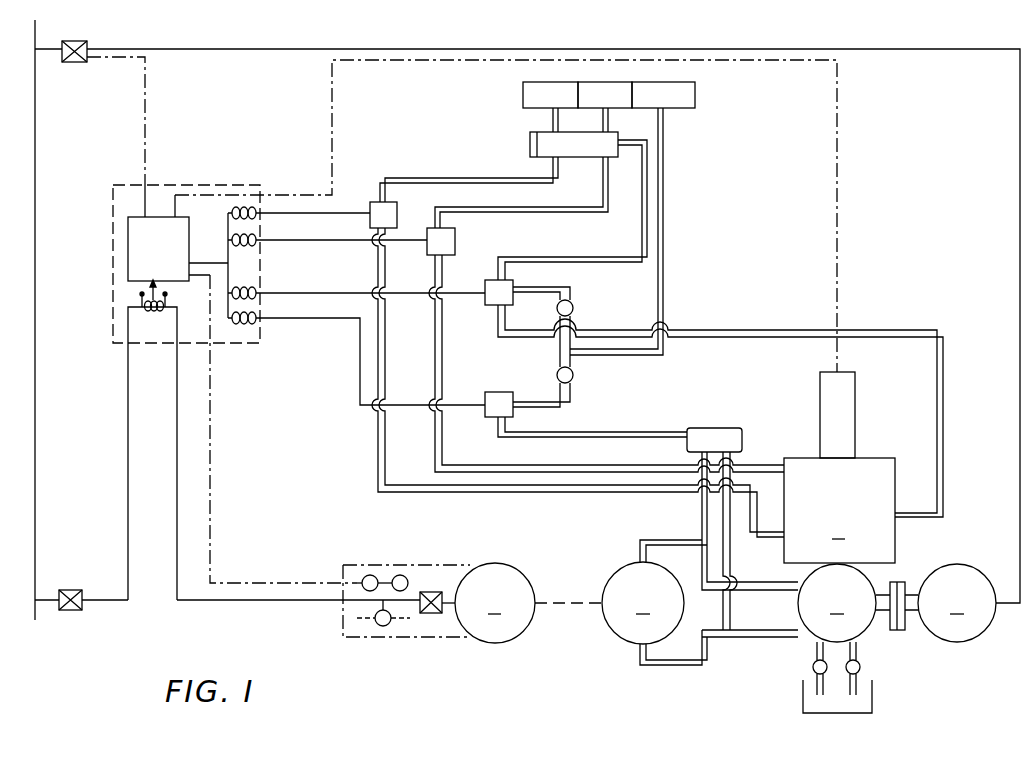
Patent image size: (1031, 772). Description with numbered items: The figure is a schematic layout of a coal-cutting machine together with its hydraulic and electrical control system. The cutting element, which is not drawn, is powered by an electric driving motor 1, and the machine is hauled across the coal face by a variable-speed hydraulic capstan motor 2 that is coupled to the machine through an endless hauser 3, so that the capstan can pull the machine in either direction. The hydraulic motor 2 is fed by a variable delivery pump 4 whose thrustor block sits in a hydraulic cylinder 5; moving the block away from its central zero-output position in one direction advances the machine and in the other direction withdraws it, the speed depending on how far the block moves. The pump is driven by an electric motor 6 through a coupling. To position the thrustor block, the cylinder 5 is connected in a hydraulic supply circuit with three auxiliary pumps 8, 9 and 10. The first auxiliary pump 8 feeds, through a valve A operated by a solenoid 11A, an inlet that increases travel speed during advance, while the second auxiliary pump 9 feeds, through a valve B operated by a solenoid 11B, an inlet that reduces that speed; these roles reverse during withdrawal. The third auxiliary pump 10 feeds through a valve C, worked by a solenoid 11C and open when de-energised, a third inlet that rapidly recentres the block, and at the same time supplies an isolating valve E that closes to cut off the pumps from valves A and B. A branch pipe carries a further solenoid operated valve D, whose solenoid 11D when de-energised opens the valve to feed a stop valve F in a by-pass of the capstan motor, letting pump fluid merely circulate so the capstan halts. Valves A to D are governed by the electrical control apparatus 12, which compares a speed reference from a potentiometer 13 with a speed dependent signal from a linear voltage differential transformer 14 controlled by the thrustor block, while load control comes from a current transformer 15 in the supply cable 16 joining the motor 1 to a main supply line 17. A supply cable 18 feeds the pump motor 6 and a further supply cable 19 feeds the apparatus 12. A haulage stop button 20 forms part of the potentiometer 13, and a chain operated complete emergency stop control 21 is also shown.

The electric driving motor 1 is at (495, 603).
The variable-speed hydraulic capstan motor 2 is at (643, 603).
The endless hauser 3 is at (576, 595).
The variable delivery pump 4 is at (837, 638).
The hydraulic cylinder 5 is at (839, 510).
The electric motor 6 is at (936, 603).
The first auxiliary pump 8 is at (550, 107).
The second auxiliary pump 9 is at (605, 107).
The third auxiliary pump 10 is at (663, 95).
The solenoid 11A is at (258, 206).
The solenoid 11B is at (258, 234).
The solenoid 11C is at (258, 288).
The solenoid 11D is at (258, 313).
The control apparatus 12 is at (128, 290).
The potentiometer 13 is at (404, 576).
The linear voltage differential transformer 14 is at (850, 405).
The current transformer 15 is at (158, 315).
The supply cable 16 is at (270, 603).
The main supply line 17 is at (35, 463).
The supply cable 18 is at (265, 49).
The supply cable 19 is at (148, 122).
The haulage stop button 20 is at (366, 576).
The chain operated complete emergency stop control 21 is at (383, 627).
The valve A is at (385, 220).
The valve B is at (450, 243).
The valve C is at (487, 283).
The valve D is at (487, 396).
The isolating valve E is at (540, 145).
The stop valve F is at (712, 430).